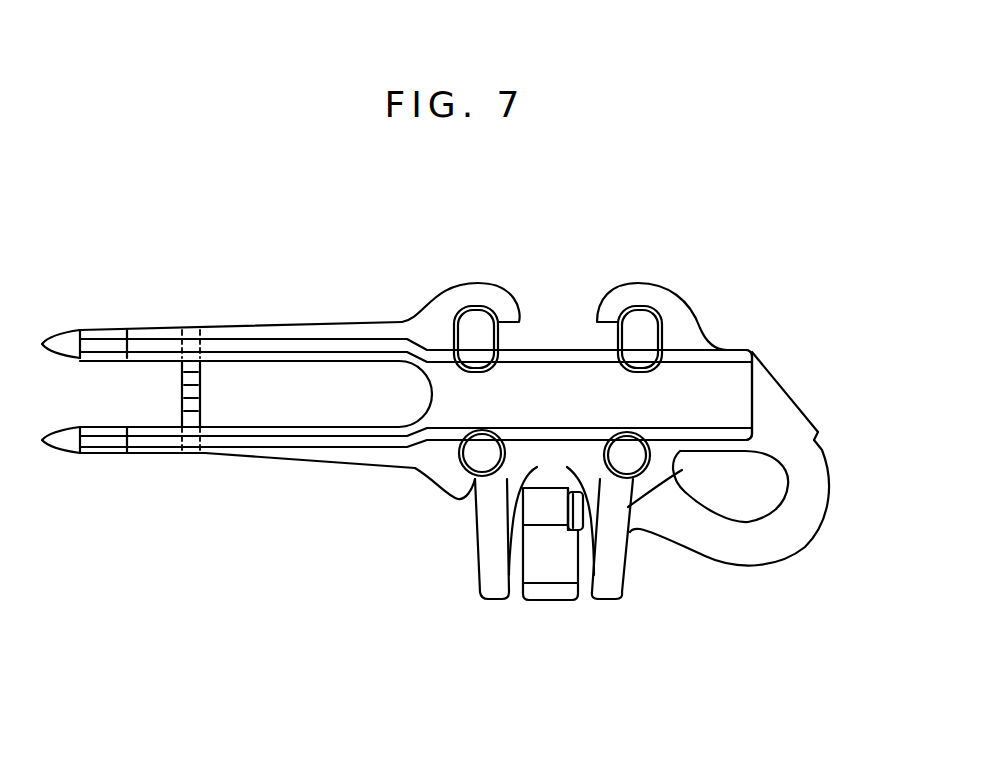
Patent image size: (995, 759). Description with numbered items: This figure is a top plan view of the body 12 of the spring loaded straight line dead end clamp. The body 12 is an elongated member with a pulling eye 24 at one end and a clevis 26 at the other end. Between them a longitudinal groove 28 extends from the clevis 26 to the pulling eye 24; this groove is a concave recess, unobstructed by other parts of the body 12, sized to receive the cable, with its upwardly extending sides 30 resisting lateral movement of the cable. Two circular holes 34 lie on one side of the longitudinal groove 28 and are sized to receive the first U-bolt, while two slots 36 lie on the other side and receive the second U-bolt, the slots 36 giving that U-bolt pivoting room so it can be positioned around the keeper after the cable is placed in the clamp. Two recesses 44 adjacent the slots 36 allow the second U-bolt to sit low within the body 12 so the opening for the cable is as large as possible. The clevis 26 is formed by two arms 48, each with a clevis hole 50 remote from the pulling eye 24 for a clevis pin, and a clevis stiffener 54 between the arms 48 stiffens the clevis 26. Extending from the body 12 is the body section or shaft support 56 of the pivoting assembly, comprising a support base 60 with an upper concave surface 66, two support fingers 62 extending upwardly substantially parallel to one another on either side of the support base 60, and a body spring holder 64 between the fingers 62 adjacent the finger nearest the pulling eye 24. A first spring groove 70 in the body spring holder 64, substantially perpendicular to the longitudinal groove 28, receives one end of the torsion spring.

The body 12 is at (324, 296).
The pulling eye 24 is at (763, 518).
The clevis 26 is at (210, 460).
The longitudinal groove 28 is at (720, 393).
The sides 30 is at (723, 357).
The circular holes 34 is at (465, 474).
The slots 36 is at (460, 325).
The recesses 44 is at (522, 346).
The clevis arms 48 is at (272, 360).
The clevis hole 50 is at (112, 330).
The clevis stiffener 54 is at (178, 395).
The body section or shaft support 56 is at (553, 622).
The support base 60 is at (528, 600).
The support fingers 62 is at (478, 563).
The body spring holder 64 is at (567, 510).
The upper concave surface 66 is at (562, 567).
The first spring groove 70 is at (597, 517).